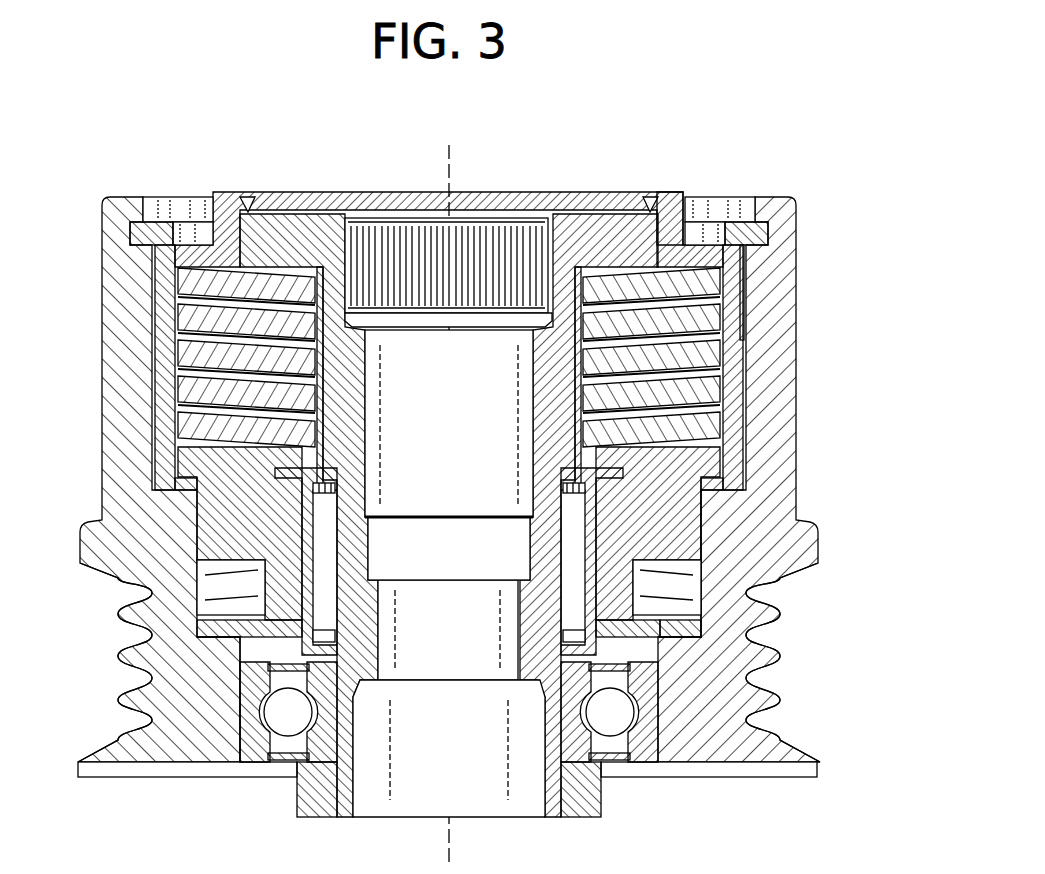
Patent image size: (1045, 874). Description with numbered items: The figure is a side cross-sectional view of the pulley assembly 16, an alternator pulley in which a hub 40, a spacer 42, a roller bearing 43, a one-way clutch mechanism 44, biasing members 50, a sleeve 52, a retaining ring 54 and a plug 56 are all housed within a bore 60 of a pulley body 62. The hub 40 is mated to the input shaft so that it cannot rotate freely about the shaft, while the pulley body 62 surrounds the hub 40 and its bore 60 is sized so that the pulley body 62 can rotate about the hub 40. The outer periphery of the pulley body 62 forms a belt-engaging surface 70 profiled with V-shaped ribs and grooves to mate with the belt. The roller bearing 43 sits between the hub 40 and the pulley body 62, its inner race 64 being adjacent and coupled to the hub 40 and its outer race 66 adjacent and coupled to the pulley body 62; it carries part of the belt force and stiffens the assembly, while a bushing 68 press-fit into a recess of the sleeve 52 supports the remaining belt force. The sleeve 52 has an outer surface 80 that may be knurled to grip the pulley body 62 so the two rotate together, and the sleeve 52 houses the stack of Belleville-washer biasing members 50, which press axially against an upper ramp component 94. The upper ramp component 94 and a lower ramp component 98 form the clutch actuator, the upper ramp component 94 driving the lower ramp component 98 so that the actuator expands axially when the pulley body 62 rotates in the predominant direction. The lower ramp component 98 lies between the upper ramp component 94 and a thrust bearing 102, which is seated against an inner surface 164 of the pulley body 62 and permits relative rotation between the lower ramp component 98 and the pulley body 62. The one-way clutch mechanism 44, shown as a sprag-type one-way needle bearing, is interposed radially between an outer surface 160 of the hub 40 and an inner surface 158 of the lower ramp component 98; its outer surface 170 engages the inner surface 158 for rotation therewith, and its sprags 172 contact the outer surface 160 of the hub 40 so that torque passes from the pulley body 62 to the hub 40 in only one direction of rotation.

The pulley assembly 16 is at (707, 133).
The hub 40 is at (562, 194).
The spacer 42 is at (590, 800).
The roller bearing 43 is at (240, 707).
The one-way clutch mechanism 44 is at (340, 613).
The biasing members 50 is at (703, 397).
The sleeve 52 is at (733, 328).
The retaining ring 54 is at (762, 198).
The plug 56 is at (642, 198).
The bore 60 is at (197, 537).
The pulley body 62 is at (795, 281).
The inner race 64 is at (323, 745).
The outer race 66 is at (240, 680).
The bushing 68 is at (668, 196).
The belt-engaging surface 70 is at (780, 632).
The outer surface 80 is at (745, 262).
The upper ramp component 94 is at (703, 463).
The lower ramp component 98 is at (687, 560).
The thrust bearing 102 is at (655, 615).
The inner surface 158 is at (300, 596).
The outer surface 160 is at (367, 567).
The inner surface 164 is at (682, 615).
The outer surface 170 is at (307, 510).
The sprags 172 is at (337, 505).